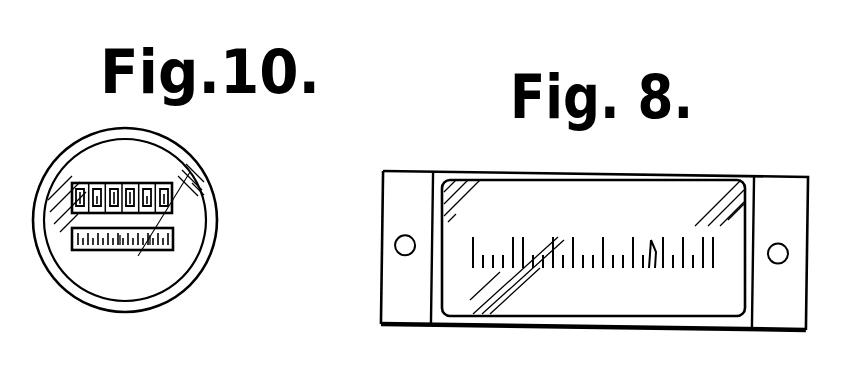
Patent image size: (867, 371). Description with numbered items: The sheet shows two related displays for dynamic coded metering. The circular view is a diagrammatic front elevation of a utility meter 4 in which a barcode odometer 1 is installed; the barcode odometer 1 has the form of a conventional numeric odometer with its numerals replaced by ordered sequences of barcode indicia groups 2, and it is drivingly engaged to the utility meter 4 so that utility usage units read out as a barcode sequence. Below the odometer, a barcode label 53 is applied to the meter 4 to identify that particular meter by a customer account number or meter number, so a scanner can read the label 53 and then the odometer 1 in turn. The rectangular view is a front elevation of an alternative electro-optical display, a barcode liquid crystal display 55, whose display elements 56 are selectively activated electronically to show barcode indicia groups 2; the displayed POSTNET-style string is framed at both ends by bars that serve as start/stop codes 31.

In FIG. 10, the barcode odometer 1 is at (82, 183).
In FIG. 10, the utility meter 4 is at (200, 162).
In FIG. 10, the barcode label 53 is at (173, 247).
In FIG. 8, the barcode liquid crystal display (LCD) 55 is at (428, 175).
In FIG. 8, the barcode indicia groups 2 is at (566, 292).
In FIG. 8, the start/stop codes 31 is at (475, 246).
In FIG. 8, the display elements 56 is at (651, 240).